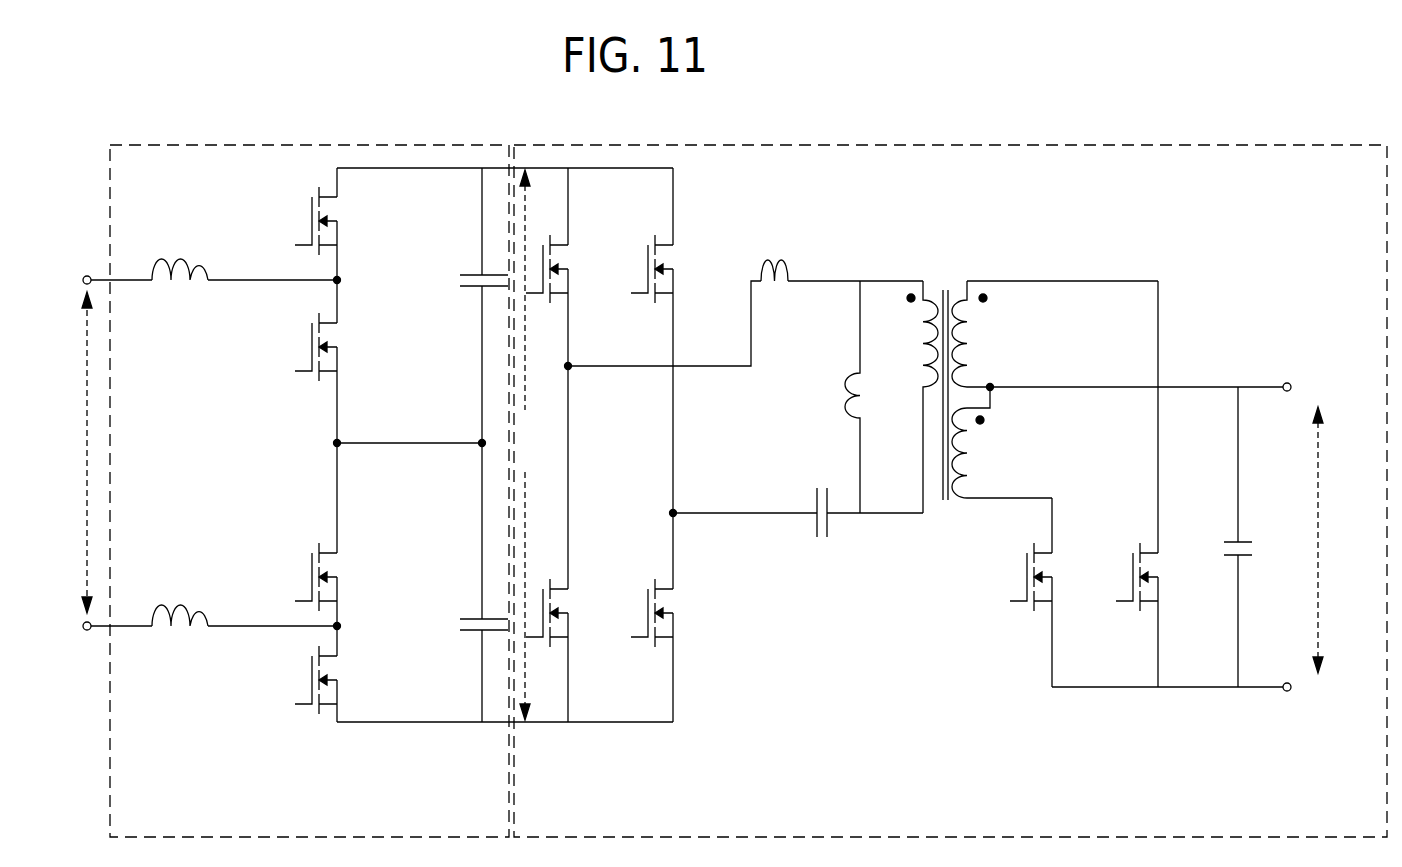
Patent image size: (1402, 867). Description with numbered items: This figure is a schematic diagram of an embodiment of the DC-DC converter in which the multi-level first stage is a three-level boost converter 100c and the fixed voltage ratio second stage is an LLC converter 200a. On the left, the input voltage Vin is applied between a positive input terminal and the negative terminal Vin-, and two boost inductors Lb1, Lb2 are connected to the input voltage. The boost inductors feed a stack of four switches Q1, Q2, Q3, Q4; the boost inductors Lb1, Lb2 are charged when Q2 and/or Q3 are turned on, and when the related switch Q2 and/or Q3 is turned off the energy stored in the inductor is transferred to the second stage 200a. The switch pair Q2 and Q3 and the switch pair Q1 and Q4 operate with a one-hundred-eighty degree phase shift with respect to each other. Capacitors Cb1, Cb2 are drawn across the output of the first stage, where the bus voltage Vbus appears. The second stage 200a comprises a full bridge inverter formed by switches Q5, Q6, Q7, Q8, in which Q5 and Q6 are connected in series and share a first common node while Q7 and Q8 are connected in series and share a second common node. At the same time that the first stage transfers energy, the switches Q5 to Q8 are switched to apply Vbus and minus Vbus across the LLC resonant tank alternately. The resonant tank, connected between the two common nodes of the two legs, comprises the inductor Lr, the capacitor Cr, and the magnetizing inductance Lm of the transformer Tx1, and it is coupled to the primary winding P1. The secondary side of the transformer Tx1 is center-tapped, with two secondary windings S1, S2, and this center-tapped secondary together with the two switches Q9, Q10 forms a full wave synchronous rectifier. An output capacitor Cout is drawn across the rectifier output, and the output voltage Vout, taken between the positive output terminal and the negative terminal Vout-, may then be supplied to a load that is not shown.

The boost converter 100c is at (329, 826).
The LLC converter 200a is at (972, 826).
The negative input terminal Vin- is at (83, 625).
The input voltage Vin is at (86, 452).
The boost inductor Lb1 is at (244, 254).
The boost inductor Lb2 is at (244, 595).
The switch Q1 is at (331, 224).
The switch Q2 is at (331, 361).
The switch Q3 is at (331, 534).
The switch Q4 is at (331, 674).
The first bus capacitor Cb1 is at (457, 305).
The second bus capacitor Cb2 is at (457, 582).
The bus voltage Vbus is at (523, 445).
The switch Q5 is at (562, 267).
The switch Q6 is at (562, 544).
The switch Q7 is at (667, 340).
The switch Q8 is at (667, 617).
The inductor Lr is at (774, 255).
The magnetizing inductance Lm is at (836, 397).
The capacitor Cr is at (798, 528).
The transformer Tx1 is at (1026, 381).
The primary winding P1 is at (916, 397).
The first secondary winding S1 is at (1055, 334).
The second secondary winding S2 is at (1002, 442).
The switch Q9 is at (1048, 592).
The switch Q10 is at (1158, 484).
The output capacitor Cout is at (1255, 537).
The negative output terminal Vout- is at (1311, 687).
The output voltage Vout is at (1320, 540).